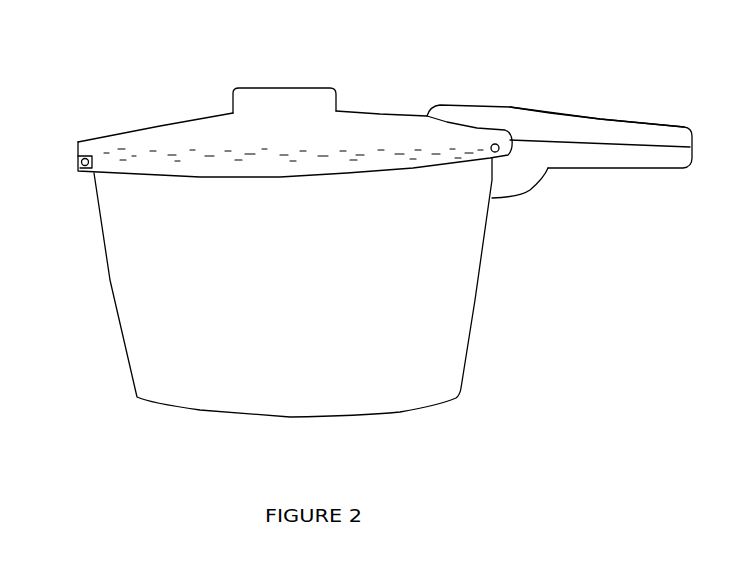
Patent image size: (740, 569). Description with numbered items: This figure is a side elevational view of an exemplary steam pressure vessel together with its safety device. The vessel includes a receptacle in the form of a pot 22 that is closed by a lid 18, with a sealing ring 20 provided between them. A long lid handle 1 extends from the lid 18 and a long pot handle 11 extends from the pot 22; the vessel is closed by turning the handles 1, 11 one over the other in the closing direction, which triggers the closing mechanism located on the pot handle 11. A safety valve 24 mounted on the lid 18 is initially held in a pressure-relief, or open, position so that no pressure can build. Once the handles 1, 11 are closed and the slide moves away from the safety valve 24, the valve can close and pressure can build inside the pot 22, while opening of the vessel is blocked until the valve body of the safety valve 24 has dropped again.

The lid handle 1 is at (580, 117).
The pot handle 11 is at (587, 160).
The lid 18 is at (185, 138).
The sealing ring 20 is at (80, 174).
The pot 22 is at (437, 365).
The safety valve 24 is at (278, 97).